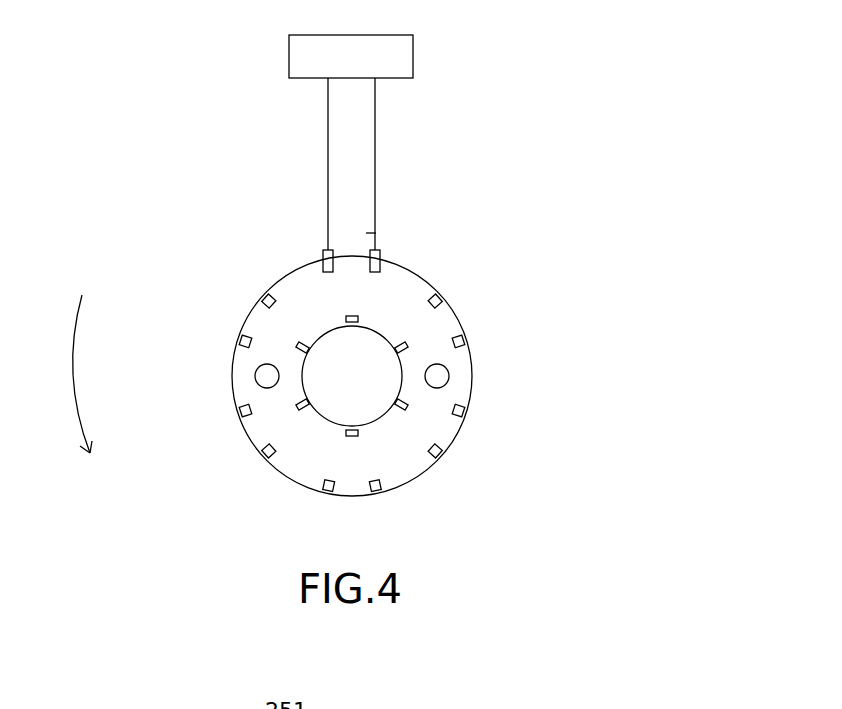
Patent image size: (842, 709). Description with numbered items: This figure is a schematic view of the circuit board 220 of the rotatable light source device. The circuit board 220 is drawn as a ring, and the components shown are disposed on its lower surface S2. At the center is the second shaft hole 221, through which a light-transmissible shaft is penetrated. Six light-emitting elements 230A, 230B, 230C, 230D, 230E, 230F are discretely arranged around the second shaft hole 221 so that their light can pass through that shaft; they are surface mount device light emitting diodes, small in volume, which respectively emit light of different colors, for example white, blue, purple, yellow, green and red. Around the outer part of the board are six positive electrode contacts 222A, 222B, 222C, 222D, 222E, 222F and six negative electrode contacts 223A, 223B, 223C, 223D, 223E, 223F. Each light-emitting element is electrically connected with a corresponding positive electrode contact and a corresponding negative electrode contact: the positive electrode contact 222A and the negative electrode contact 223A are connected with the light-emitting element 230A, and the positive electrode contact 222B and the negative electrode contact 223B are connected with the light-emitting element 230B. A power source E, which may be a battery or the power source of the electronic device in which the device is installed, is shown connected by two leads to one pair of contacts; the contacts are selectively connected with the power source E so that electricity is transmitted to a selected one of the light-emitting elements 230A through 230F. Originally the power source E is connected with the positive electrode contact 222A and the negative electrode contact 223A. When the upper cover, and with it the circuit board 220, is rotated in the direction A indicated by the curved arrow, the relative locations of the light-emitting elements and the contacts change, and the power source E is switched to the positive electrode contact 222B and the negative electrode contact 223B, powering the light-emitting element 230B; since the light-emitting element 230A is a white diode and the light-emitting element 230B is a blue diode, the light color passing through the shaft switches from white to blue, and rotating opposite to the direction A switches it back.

The circuit board 220 is at (442, 257).
The second shaft hole 221 is at (320, 383).
The positive electrode contact 222A is at (310, 262).
The positive electrode contact 222B is at (440, 298).
The positive electrode contact 222C is at (465, 412).
The positive electrode contact 222D is at (381, 489).
The positive electrode contact 222E is at (264, 456).
The positive electrode contact 222F is at (242, 343).
The negative electrode contact 223A is at (408, 245).
The negative electrode contact 223B is at (465, 341).
The negative electrode contact 223C is at (440, 458).
The negative electrode contact 223D is at (323, 489).
The negative electrode contact 223E is at (240, 411).
The negative electrode contact 223F is at (265, 298).
The light-emitting element 230A is at (347, 317).
The light-emitting element 230B is at (408, 348).
The light-emitting element 230C is at (410, 407).
The light-emitting element 230D is at (353, 436).
The light-emitting element 230E is at (297, 407).
The light-emitting element 230F is at (300, 342).
The lower surface S2 is at (295, 467).
The direction A is at (69, 374).
The power source E is at (400, 58).